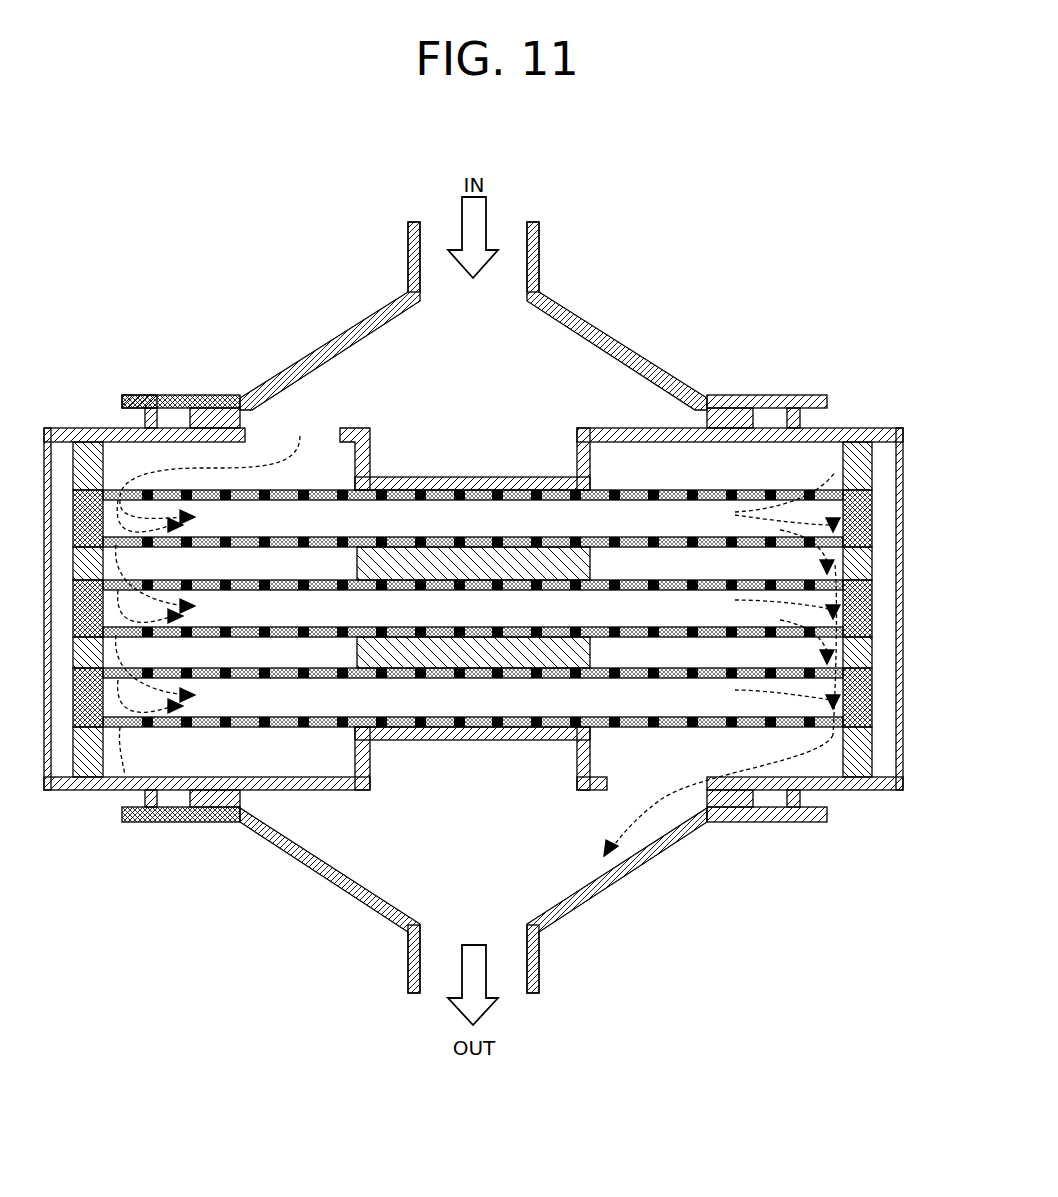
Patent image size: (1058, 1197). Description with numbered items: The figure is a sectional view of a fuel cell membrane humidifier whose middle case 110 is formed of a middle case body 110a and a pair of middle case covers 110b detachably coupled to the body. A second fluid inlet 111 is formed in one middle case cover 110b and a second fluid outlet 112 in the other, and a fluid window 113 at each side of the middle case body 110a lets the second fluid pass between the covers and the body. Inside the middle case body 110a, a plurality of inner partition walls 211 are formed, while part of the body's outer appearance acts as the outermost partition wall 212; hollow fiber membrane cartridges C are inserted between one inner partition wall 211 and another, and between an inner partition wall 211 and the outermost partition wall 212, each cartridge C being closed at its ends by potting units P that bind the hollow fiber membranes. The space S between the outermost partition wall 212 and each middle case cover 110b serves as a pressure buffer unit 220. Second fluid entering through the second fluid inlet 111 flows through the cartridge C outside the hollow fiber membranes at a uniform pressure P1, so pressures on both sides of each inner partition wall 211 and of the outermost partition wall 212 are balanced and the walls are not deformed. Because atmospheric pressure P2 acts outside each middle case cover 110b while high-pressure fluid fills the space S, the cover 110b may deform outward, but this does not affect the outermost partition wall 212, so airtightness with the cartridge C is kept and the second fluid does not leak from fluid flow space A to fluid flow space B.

The middle case 110 is at (158, 268).
The middle case body 110a is at (110, 422).
The middle case cover 110b is at (256, 368).
The second fluid inlet 111 is at (430, 272).
The second fluid outlet 112 is at (430, 972).
The fluid window 113 is at (292, 484).
The inner partition wall 211 is at (592, 563).
The outermost partition wall 212 is at (425, 480).
The pressure buffer unit 220 is at (540, 365).
The fluid flow space A is at (325, 484).
The fluid flow space B is at (603, 484).
The hollow fiber membrane cartridge C is at (873, 517).
The potting unit P is at (860, 700).
The pressure P1 is at (512, 699).
The atmospheric pressure P2 is at (80, 400).
The space S is at (466, 446).